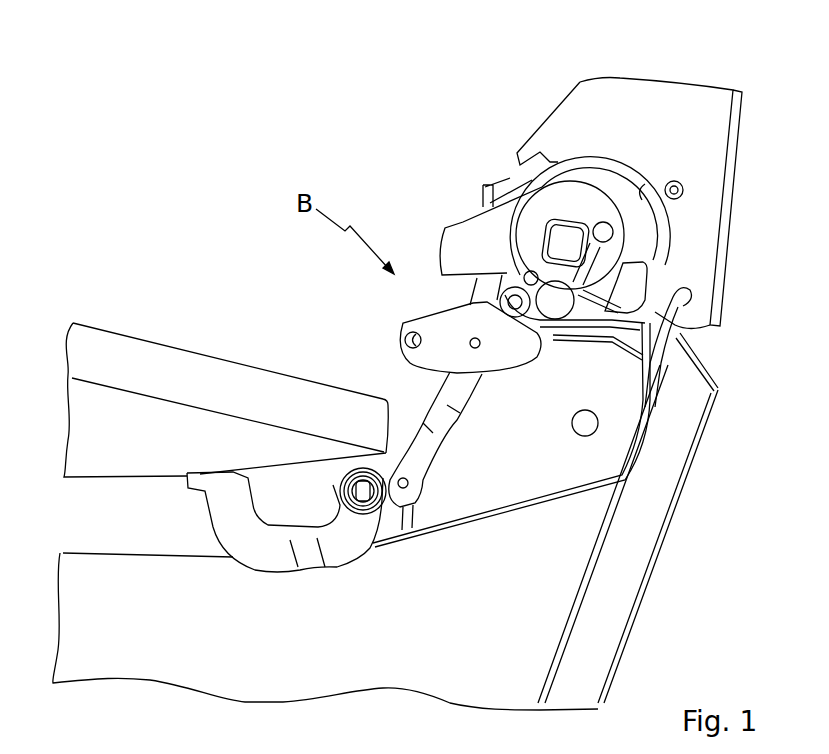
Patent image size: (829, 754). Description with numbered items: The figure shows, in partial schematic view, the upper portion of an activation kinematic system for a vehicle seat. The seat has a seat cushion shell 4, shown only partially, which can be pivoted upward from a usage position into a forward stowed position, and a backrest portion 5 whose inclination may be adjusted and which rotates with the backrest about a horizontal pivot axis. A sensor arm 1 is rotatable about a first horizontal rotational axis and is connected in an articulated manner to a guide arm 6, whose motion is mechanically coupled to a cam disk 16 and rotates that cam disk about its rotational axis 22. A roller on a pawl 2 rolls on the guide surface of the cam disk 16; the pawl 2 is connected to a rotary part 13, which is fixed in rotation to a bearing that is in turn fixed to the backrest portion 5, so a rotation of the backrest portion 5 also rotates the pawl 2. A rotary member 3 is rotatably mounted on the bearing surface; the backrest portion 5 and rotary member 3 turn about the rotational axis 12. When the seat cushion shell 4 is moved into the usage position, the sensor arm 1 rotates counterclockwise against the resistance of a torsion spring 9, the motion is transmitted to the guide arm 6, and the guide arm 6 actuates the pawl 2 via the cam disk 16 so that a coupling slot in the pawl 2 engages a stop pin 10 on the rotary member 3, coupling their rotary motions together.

The sensor arm 1 is at (230, 528).
The pawl 2 is at (625, 283).
The rotary member 3 is at (463, 247).
The seat cushion shell 4 is at (105, 355).
The backrest portion 5 is at (657, 104).
The guide arm 6 is at (413, 405).
The torsion spring 9 is at (340, 485).
The stop pin 10 is at (532, 277).
The rotational axis 12 is at (567, 236).
The rotary part 13 is at (592, 202).
The cam disk 16 is at (440, 337).
The rotational axis 22 is at (407, 330).